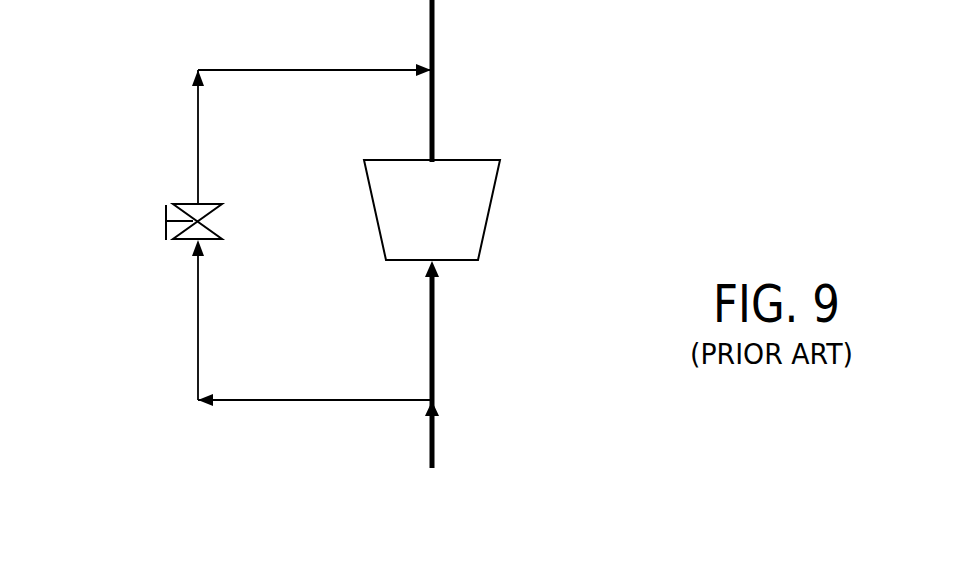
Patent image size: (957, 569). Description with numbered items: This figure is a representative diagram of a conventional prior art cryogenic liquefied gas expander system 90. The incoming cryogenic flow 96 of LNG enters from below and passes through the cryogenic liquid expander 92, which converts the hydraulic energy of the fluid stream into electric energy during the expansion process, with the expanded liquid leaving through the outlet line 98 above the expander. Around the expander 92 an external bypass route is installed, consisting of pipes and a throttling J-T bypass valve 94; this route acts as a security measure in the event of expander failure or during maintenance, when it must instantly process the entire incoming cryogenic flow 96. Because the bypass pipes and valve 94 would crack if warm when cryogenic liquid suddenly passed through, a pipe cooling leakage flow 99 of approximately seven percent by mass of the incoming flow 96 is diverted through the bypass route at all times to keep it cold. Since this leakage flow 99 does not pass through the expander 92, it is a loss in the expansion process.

The cryogenic liquefied gas expander system 90 is at (149, 47).
The cryogenic liquid expander 92 is at (492, 212).
The J-T valve 94 is at (214, 205).
The incoming cryogenic flow 96 is at (435, 342).
The expander outlet line 98 is at (435, 113).
The pipe cooling leakage flow 99 is at (198, 352).